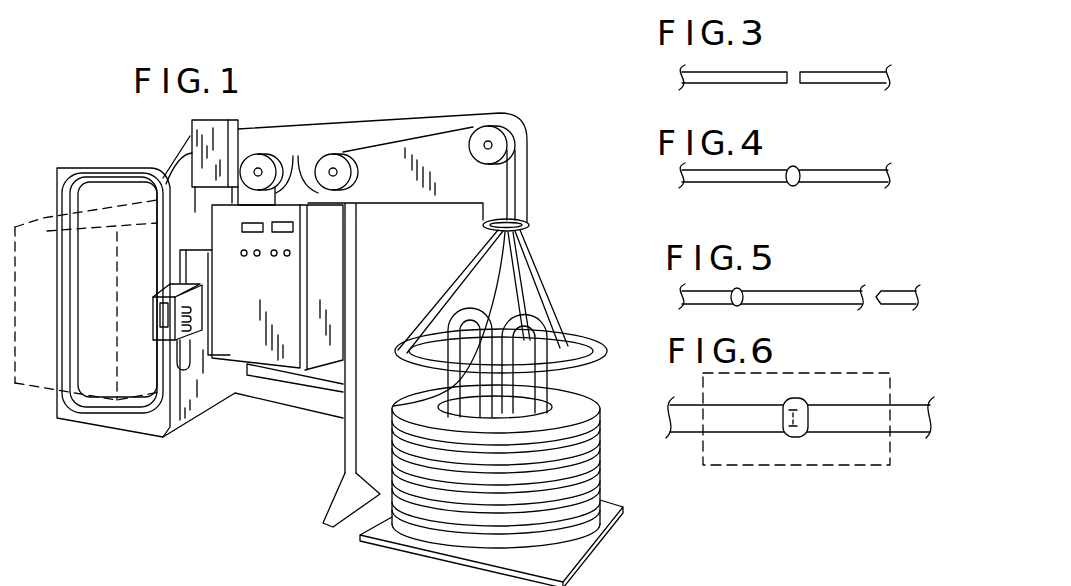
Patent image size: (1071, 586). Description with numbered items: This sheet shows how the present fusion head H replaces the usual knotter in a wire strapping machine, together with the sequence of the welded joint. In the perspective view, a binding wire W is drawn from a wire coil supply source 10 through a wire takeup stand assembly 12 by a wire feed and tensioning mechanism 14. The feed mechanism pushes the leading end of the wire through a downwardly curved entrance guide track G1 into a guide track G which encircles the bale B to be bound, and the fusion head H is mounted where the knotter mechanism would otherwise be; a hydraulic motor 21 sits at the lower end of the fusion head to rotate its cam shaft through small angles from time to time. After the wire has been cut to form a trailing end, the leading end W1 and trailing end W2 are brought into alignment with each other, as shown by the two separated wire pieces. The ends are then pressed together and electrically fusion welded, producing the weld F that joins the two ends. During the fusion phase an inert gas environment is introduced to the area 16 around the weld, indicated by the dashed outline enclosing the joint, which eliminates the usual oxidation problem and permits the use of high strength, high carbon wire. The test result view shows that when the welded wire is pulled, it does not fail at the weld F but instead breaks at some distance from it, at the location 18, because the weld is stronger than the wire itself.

In FIG. 1, the bale B is at (43, 217).
In FIG. 1, the guide track G is at (96, 176).
In FIG. 1, the entrance guide track G1 is at (166, 176).
In FIG. 1, the fusion head H is at (153, 306).
In FIG. 1, the wire feed and tensioning mechanism 14 is at (220, 125).
In FIG. 1, the binding wire W is at (540, 180).
In FIG. 1, the wire takeup stand assembly 12 is at (248, 290).
In FIG. 1, the hydraulic motor 21 is at (182, 358).
In FIG. 1, the wire coil supply source 10 is at (600, 423).
In FIG. 3, the leading end W1 is at (757, 72).
In FIG. 4, the leading end W1 is at (752, 183).
In FIG. 5, the leading end W1 is at (688, 305).
In FIG. 6, the leading end W1 is at (742, 432).
In FIG. 3, the trailing end W2 is at (817, 72).
In FIG. 4, the trailing end W2 is at (830, 183).
In FIG. 5, the trailing end W2 is at (803, 305).
In FIG. 6, the trailing end W2 is at (905, 432).
In FIG. 4, the weld F is at (794, 167).
In FIG. 5, the weld F is at (744, 292).
In FIG. 6, the weld F is at (797, 437).
In FIG. 5, the break location 18 is at (863, 292).
In FIG. 6, the inert gas area 16 is at (703, 467).